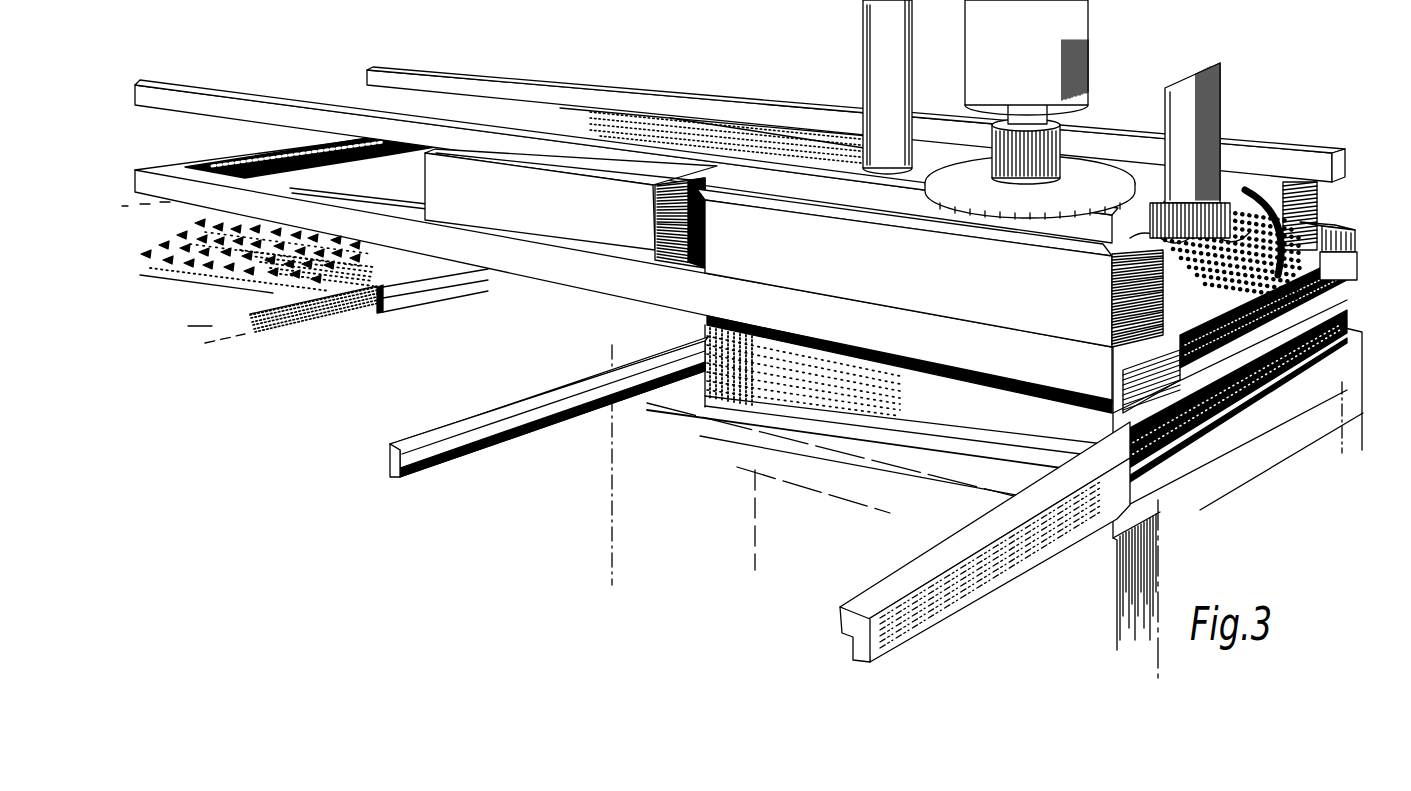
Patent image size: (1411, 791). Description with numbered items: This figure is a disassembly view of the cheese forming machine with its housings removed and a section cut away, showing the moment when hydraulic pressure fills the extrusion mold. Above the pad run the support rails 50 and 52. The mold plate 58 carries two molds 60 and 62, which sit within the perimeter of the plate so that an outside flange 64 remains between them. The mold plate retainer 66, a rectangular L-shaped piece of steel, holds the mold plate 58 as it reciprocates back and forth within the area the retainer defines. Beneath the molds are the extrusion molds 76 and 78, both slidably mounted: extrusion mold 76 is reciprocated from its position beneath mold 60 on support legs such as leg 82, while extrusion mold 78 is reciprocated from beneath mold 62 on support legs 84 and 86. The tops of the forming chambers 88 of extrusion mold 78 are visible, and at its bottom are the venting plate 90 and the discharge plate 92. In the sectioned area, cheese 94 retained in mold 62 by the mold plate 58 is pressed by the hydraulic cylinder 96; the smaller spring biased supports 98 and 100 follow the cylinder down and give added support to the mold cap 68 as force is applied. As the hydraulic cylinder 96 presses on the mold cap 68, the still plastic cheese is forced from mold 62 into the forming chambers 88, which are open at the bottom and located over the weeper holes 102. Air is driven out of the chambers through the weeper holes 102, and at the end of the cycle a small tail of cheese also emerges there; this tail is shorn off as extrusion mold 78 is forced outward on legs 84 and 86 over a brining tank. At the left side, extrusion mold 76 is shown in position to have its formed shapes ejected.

The support rail 50 is at (243, 103).
The support rail 52 is at (437, 85).
The mold plate 58 is at (631, 279).
The mold 60 is at (527, 195).
The mold 62 is at (1022, 292).
The outside flange 64 is at (1180, 313).
The mold plate retainer 66 is at (575, 268).
The mold cap 68 is at (1232, 200).
The extrusion mold 76 is at (233, 285).
The extrusion mold 78 is at (1055, 416).
The support leg 82 is at (281, 298).
The support leg 84 is at (435, 437).
The support leg 86 is at (1100, 463).
The forming chambers 88 is at (198, 244).
The venting plate 90 is at (1265, 382).
The discharge plate 92 is at (1240, 408).
The cheese 94 is at (1357, 250).
The hydraulic cylinder 96 is at (1087, 73).
The spring biased support 98 is at (900, 78).
The spring biased support 100 is at (1197, 118).
The weeper holes 102 is at (403, 280).